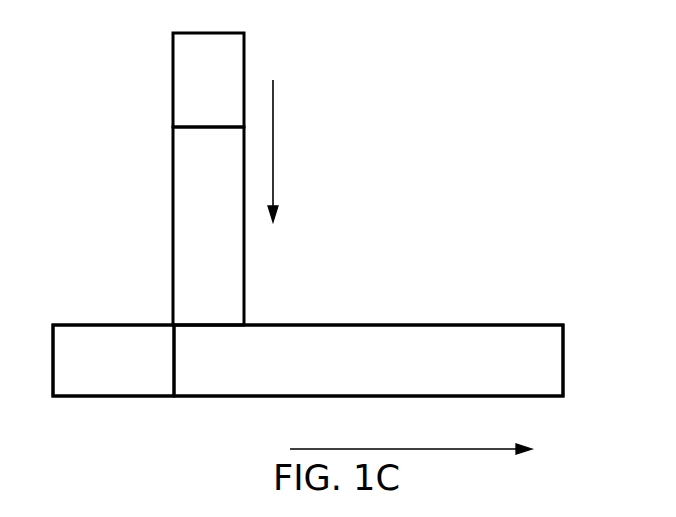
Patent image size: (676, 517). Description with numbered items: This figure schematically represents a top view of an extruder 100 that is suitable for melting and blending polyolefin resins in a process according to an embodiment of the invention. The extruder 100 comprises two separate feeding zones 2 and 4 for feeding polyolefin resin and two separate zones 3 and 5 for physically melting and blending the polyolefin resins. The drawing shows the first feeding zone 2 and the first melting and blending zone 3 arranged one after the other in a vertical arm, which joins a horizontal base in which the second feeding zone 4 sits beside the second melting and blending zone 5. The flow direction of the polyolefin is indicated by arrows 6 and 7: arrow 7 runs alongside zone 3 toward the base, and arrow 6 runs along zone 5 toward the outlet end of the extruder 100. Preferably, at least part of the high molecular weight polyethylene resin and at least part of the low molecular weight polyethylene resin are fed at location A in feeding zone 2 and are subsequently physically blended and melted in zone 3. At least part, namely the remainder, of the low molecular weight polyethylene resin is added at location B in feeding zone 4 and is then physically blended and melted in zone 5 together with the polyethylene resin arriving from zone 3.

The extruder 100 is at (547, 307).
The feeding zone 2 is at (198, 102).
The melting and blending zone 3 is at (198, 232).
The feeding zone 4 is at (103, 364).
The melting and blending zone 5 is at (275, 364).
The arrow 6 is at (408, 449).
The arrow 7 is at (274, 180).
The location A is at (173, 81).
The location B is at (110, 323).